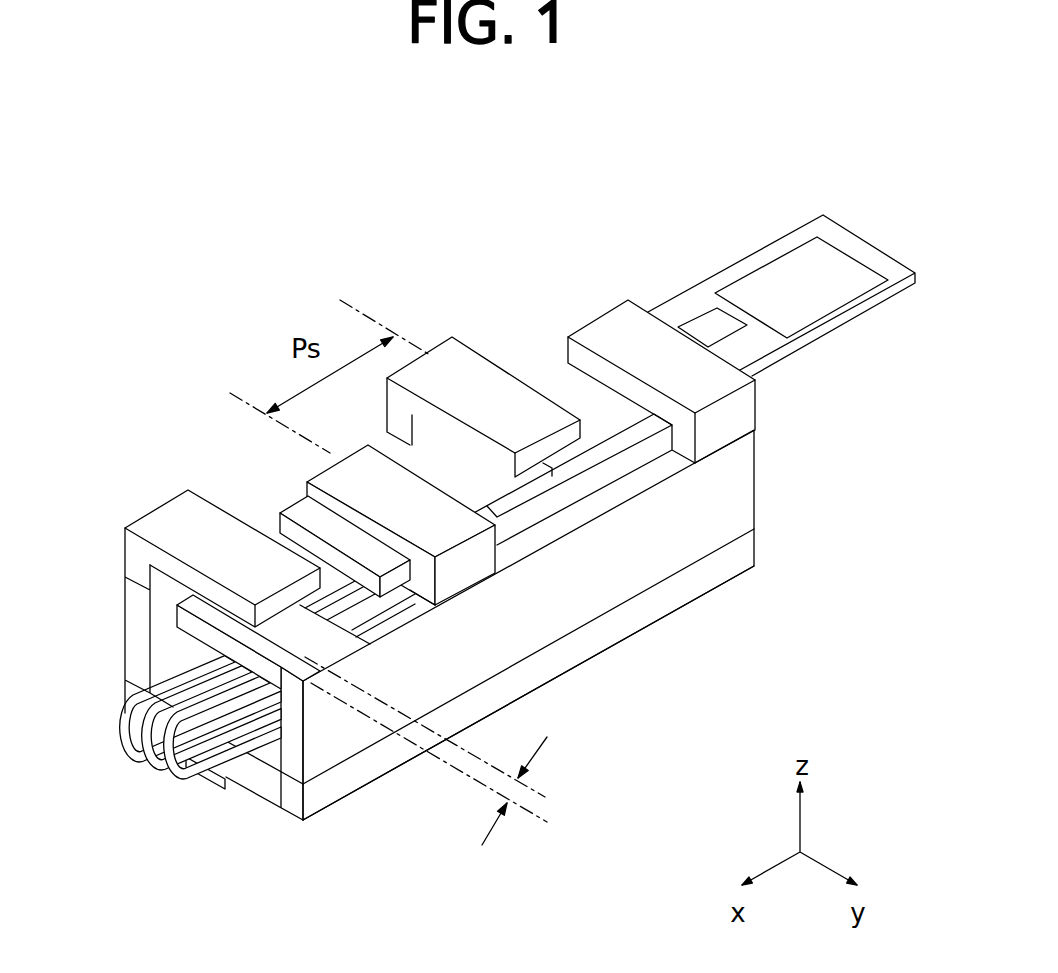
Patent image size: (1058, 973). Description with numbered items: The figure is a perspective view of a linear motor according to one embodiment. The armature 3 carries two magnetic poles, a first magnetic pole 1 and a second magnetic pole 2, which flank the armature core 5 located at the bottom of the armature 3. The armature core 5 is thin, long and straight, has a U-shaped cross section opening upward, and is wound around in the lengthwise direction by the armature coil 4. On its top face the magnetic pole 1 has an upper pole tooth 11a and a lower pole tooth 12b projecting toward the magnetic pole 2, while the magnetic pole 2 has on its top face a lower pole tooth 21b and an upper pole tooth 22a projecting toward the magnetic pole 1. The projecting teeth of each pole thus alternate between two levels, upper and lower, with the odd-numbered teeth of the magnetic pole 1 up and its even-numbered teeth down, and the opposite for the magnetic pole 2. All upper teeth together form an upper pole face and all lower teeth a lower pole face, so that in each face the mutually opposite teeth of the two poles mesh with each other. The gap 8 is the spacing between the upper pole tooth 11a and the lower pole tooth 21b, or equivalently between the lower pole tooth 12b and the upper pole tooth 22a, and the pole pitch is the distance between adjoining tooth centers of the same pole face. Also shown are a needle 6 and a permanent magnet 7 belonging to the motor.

The magnetic pole 1 is at (179, 567).
The magnetic pole 2 is at (293, 745).
The armature 3 is at (510, 560).
The armature coil 4 is at (178, 797).
The armature core 5 is at (253, 793).
The needle 6 is at (800, 352).
The permanent magnet 7 is at (752, 288).
The gap 8 is at (443, 751).
The upper pole tooth 11a is at (176, 527).
The lower pole tooth 12b is at (317, 523).
The lower pole tooth 21b is at (317, 633).
The upper pole tooth 22a is at (452, 521).